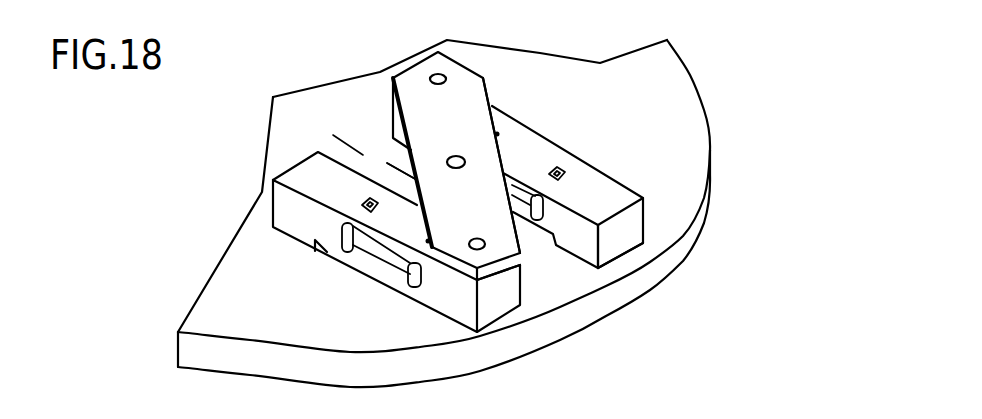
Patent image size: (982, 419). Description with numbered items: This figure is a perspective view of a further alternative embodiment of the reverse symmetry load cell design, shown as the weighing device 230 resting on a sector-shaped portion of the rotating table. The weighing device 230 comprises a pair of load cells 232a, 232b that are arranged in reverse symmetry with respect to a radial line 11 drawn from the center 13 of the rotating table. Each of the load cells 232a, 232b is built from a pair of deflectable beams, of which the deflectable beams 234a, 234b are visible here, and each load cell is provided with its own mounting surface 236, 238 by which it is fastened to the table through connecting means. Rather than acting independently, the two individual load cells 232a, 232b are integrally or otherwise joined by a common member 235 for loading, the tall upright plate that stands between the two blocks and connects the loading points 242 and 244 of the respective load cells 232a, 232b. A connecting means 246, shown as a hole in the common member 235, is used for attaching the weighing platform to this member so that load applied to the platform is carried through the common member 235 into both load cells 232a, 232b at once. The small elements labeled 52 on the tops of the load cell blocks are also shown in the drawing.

The radial line 11 is at (352, 150).
The center 13 is at (333, 135).
The locating pins 52 is at (452, 216).
The weighing device 230 is at (708, 67).
The load cell 232a is at (438, 316).
The load cell 232b is at (553, 135).
The deflectable beam 234a is at (600, 273).
The deflectable beam 234b is at (493, 261).
The common member 235 is at (618, 165).
The mounting surface 236 is at (293, 247).
The mounting surface 238 is at (665, 259).
The loading point 242 is at (567, 284).
The loading point 244 is at (472, 72).
The connecting means 246 is at (528, 84).